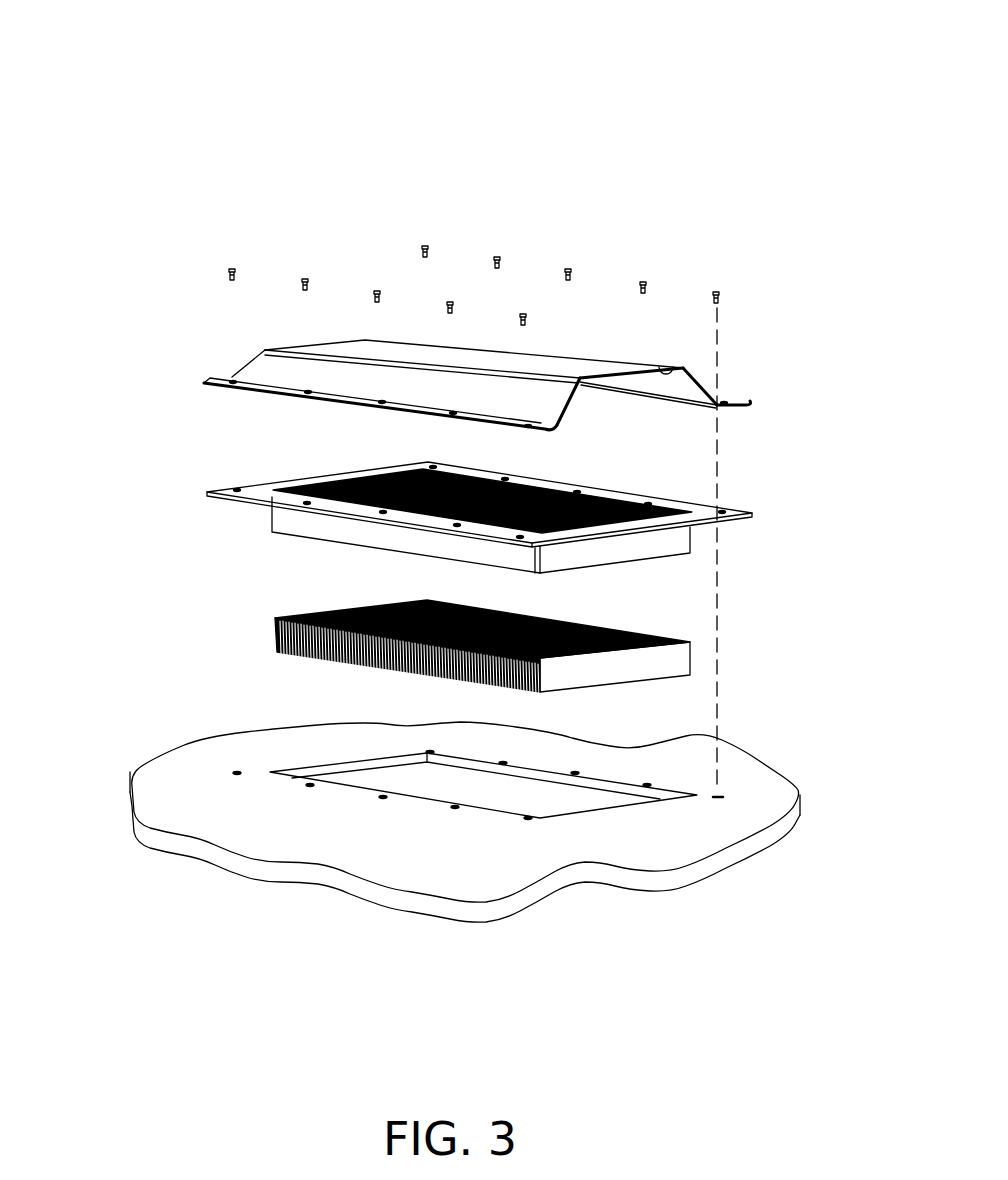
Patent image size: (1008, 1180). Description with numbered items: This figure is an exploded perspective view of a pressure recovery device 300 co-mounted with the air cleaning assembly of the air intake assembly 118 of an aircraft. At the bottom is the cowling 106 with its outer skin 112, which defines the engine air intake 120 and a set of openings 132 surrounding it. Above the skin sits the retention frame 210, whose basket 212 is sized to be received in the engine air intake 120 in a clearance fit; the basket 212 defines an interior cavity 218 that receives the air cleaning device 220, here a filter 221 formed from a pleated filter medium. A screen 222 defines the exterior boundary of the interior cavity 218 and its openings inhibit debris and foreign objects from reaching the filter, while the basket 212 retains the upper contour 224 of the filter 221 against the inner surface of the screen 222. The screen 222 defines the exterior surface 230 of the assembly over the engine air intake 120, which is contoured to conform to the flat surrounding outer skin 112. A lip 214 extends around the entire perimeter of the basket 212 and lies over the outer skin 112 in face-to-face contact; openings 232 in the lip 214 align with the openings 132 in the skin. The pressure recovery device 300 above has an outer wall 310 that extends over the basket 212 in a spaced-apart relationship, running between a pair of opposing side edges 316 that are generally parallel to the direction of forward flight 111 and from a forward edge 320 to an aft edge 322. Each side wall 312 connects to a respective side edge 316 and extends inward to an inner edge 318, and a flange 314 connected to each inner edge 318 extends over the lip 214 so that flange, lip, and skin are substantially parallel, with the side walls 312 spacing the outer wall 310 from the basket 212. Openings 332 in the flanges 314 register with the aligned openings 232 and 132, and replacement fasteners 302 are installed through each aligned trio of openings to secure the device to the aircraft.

The cowling 106 is at (175, 773).
The direction of forward flight 111 is at (855, 613).
The outer skin 112 is at (138, 829).
The air intake assembly 118 is at (212, 124).
The engine air intake 120 is at (622, 793).
The opening 132 is at (525, 818).
The retention frame 210 is at (776, 510).
The basket 212 is at (421, 537).
The lip 214 is at (728, 519).
The interior cavity 218 is at (582, 572).
The air cleaning device 220 is at (701, 666).
The filter 221 is at (693, 656).
The screen 222 is at (381, 495).
The upper contour 224 is at (348, 606).
The exterior surface 230 is at (332, 483).
The opening 232 is at (303, 513).
The pressure recovery device 300 is at (782, 362).
The replacement fasteners 302 is at (306, 280).
The outer wall 310 is at (588, 363).
The side wall 312 is at (702, 382).
The flange 314 is at (212, 378).
The side edge 316 is at (293, 348).
The inner edge 318 is at (231, 378).
The forward edge 320 is at (673, 367).
The aft edge 322 is at (341, 346).
The opening 332 is at (296, 399).